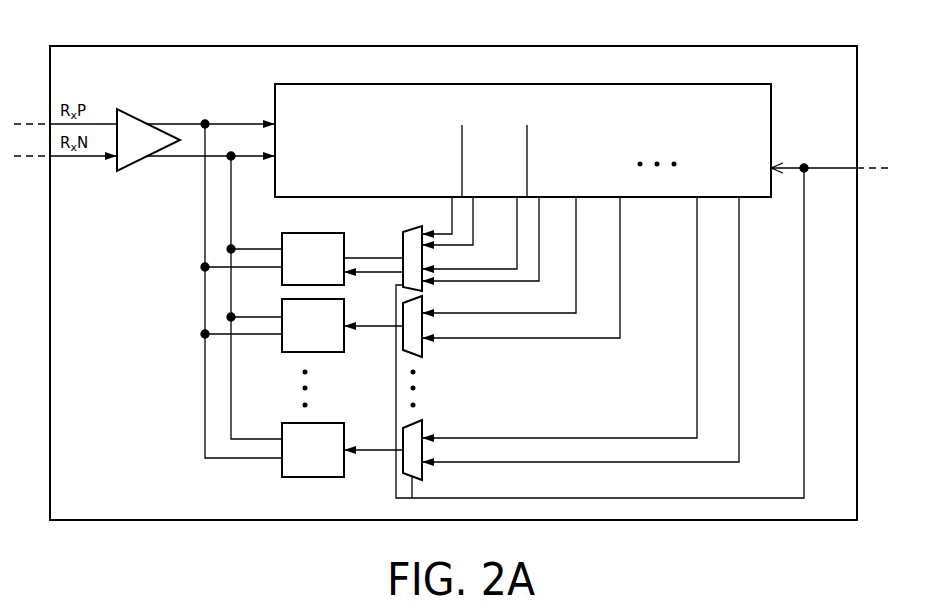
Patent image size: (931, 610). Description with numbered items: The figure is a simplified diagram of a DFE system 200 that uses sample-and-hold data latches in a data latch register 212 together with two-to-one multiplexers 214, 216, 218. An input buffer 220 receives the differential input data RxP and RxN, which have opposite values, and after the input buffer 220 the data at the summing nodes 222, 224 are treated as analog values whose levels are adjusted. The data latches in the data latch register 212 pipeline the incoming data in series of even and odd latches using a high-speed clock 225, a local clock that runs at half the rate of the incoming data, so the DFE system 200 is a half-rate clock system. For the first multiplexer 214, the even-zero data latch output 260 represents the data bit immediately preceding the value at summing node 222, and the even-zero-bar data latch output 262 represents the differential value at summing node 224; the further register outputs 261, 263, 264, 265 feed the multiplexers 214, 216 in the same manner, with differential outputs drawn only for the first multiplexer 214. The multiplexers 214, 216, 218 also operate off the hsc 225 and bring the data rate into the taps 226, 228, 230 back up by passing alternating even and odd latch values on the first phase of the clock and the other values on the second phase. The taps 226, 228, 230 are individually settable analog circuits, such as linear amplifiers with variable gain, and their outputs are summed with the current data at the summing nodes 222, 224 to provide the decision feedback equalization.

The DFE system 200 is at (711, 46).
The data latch register 212 is at (333, 84).
The first multiplexer 214 is at (403, 240).
The multiplexer 216 is at (422, 296).
The multiplexer 218 is at (422, 421).
The input buffer 220 is at (135, 109).
The summing node 222 is at (205, 118).
The summing node 224 is at (232, 160).
The high-speed clock (hsc) 225 is at (806, 172).
The tap 226 is at (328, 233).
The tap 228 is at (300, 352).
The tap 230 is at (282, 470).
The even_0 data latch output 260 is at (452, 217).
The register output line even_0 261 is at (517, 238).
The even_0-bar data latch output 262 is at (477, 230).
The register output line odd_0 263 is at (539, 262).
The register output line even_1 264 is at (577, 292).
The register output line odd_1 265 is at (586, 340).